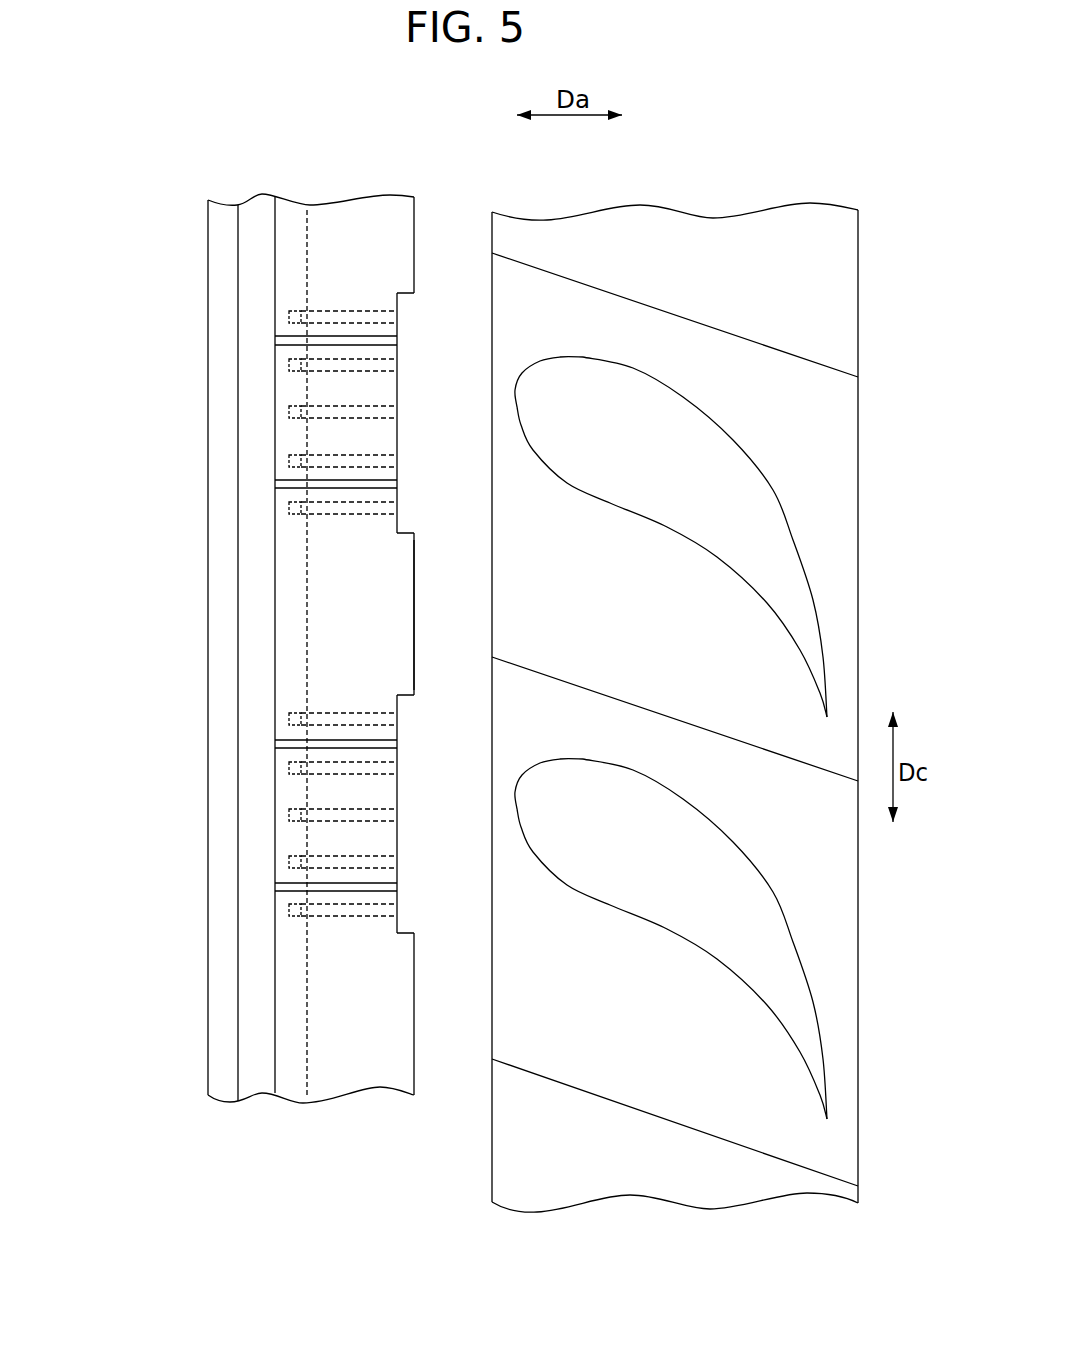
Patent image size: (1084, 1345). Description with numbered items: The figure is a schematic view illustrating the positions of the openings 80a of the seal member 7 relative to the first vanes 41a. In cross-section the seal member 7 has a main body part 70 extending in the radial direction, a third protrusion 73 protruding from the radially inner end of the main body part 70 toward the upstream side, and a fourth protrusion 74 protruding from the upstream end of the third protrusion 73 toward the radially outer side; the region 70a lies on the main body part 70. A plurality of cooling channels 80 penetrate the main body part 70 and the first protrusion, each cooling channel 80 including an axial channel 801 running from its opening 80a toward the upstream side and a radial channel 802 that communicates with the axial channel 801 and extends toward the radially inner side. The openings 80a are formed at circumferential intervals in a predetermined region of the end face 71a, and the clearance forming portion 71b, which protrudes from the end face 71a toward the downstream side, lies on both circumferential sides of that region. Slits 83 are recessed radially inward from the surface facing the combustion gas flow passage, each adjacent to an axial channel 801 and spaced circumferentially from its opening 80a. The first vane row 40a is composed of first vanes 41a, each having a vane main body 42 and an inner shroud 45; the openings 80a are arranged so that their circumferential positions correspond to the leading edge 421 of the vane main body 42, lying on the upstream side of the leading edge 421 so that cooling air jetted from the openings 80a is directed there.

The seal member 7 is at (506, 648).
The fourth protrusion 74 is at (226, 212).
The third protrusion 73 is at (258, 205).
The main body part 70 is at (290, 218).
The inner surface of casing body 70a is at (272, 1058).
The end face 71a is at (400, 523).
The clearance forming portion 71b is at (398, 648).
The cooling channel 80 is at (221, 584).
The axial channel 801 is at (221, 584).
The radial channel 802 is at (289, 311).
The opening 80a is at (430, 912).
The slit 83 is at (290, 345).
The first vane row 40a is at (870, 233).
The first vane 41a is at (729, 684).
The vane main body 42 is at (778, 521).
The leading edge 421 is at (516, 390).
The inner shroud 45 is at (838, 330).